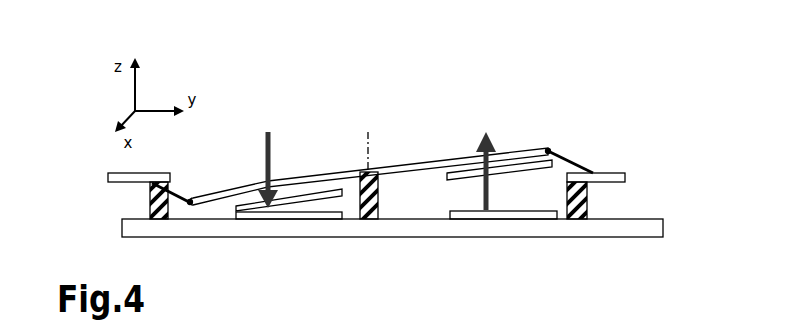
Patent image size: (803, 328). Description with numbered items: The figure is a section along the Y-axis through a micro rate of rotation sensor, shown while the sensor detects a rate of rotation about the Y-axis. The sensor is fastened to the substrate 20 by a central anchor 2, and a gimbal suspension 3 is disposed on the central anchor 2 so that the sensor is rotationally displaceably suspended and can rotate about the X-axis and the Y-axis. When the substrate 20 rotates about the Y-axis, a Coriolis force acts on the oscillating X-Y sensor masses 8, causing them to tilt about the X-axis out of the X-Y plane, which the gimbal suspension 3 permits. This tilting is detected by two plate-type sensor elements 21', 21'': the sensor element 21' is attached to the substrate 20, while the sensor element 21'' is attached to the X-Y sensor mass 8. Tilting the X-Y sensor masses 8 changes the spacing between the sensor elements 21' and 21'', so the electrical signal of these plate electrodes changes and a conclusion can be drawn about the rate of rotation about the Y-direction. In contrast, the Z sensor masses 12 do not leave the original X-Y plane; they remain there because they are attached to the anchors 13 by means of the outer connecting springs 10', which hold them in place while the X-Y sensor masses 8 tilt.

The central anchor 2 is at (392, 205).
The gimbal suspension 3 is at (409, 156).
The X-Y sensor masses 8 is at (318, 187).
The outer connecting springs 10' is at (393, 136).
The Z sensor mass 12 is at (157, 174).
The anchors 13 is at (150, 199).
The substrate 20 is at (615, 230).
The sensor element 21' is at (396, 258).
The sensor element 21'' is at (405, 116).